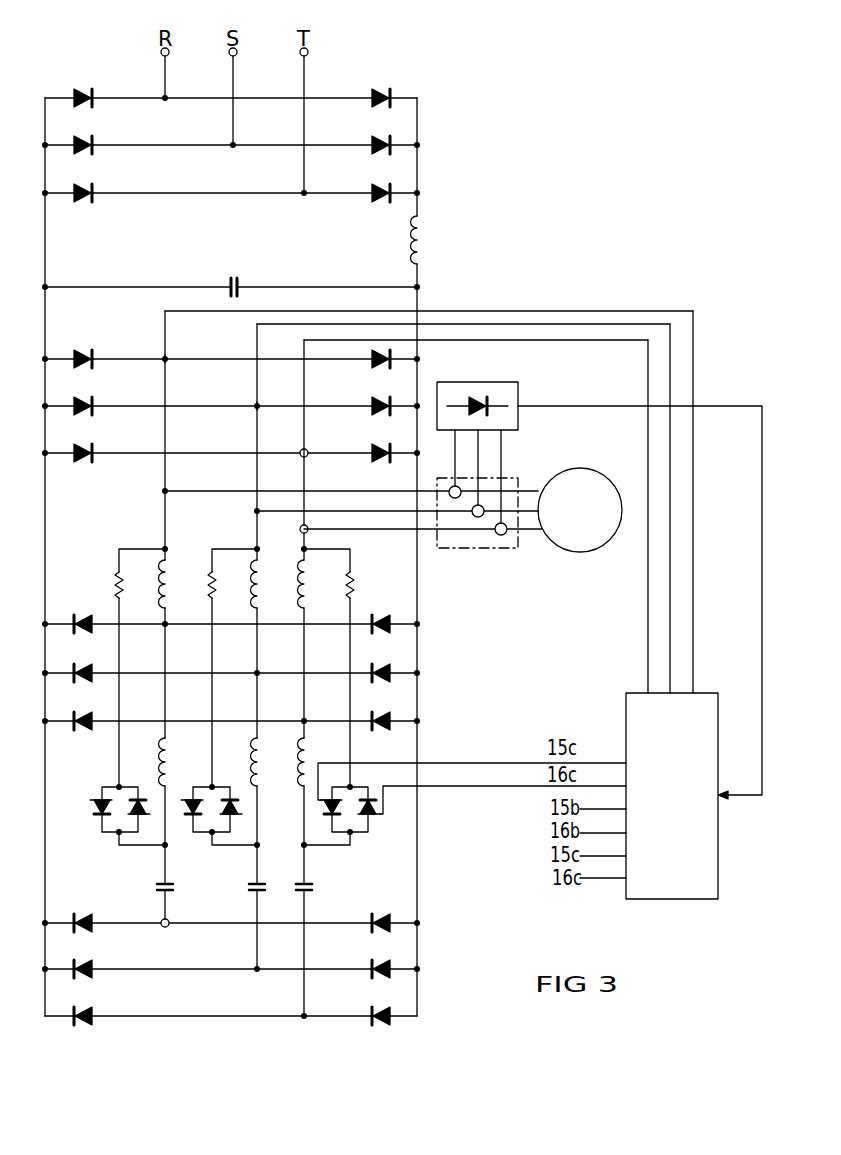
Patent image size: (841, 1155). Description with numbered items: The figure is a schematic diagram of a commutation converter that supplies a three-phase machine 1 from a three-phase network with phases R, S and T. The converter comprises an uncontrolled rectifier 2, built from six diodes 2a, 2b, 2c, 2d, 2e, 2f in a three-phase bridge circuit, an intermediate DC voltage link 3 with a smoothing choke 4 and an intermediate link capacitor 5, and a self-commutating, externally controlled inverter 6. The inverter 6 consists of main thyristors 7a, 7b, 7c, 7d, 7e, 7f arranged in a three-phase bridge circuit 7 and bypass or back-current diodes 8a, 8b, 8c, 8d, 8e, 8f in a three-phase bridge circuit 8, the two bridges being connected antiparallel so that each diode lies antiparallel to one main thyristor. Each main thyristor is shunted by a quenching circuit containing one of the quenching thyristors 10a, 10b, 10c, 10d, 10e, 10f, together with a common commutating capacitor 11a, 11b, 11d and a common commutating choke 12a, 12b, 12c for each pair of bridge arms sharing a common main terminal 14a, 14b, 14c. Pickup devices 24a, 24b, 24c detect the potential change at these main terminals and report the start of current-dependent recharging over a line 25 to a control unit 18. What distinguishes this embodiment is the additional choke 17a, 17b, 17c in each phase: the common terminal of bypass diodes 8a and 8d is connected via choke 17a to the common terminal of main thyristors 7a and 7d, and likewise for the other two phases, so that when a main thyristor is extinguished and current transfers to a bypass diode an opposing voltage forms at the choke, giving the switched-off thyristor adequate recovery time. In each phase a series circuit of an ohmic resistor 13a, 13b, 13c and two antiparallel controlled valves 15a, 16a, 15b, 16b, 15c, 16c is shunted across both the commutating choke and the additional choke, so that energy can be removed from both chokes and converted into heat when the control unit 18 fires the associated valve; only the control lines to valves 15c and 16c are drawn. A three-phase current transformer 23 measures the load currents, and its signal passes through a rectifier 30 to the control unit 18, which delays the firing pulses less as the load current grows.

The three-phase machine 1 is at (593, 470).
The uncontrolled rectifier 2 is at (211, 136).
The diode 2a is at (80, 89).
The diode 2b is at (85, 136).
The diode 2c is at (85, 184).
The diode 2d is at (376, 89).
The diode 2e is at (374, 137).
The diode 2f is at (374, 186).
The intermediate DC voltage link 3 is at (270, 230).
The smoothing choke 4 is at (424, 237).
The intermediate link capacitor 5 is at (232, 278).
The inverter 6 is at (96, 509).
The three-phase bridge circuit of main thyristors 7 is at (241, 662).
The main thyristor 7a is at (78, 616).
The main thyristor 7b is at (78, 665).
The main thyristor 7c is at (78, 713).
The main thyristor 7d is at (388, 616).
The main thyristor 7e is at (388, 665).
The main thyristor 7f is at (388, 713).
The three-phase bridge circuit of bypass diodes 8 is at (198, 442).
The bypass diode 8a is at (78, 351).
The bypass diode 8b is at (80, 399).
The bypass diode 8c is at (80, 447).
The bypass diode 8d is at (384, 366).
The bypass diode 8e is at (384, 413).
The bypass diode 8f is at (384, 460).
The quenching thyristor 10a is at (78, 915).
The quenching thyristor 10b is at (92, 963).
The quenching thyristor 10c is at (92, 1010).
The quenching thyristor 10d is at (388, 915).
The quenching thyristor 10e is at (374, 964).
The quenching thyristor 10f is at (374, 1010).
The commutating capacitor 11a is at (157, 887).
The commutating capacitor 11b is at (249, 887).
The commutation capacitor 11d is at (312, 887).
The commutating choke 12a is at (172, 760).
The commutating choke 12b is at (254, 760).
The commutating choke 12c is at (311, 760).
The ohmic resistor 13a is at (115, 586).
The ohmic resistor 13b is at (209, 586).
The ohmic resistor 13c is at (355, 586).
The common main terminal 14a is at (164, 362).
The common main terminal 14b is at (256, 409).
The common main terminal 14c is at (308, 458).
The controlled valve 15a is at (98, 800).
The controlled valve 15b is at (189, 820).
The controlled valve 15c is at (326, 822).
The controlled valve 16a is at (142, 822).
The controlled valve 16b is at (234, 822).
The controlled valve 16c is at (371, 821).
The additional choke 17a is at (170, 590).
The additional choke 17b is at (262, 590).
The additional choke 17c is at (308, 590).
The control unit 18 is at (718, 855).
The three-phase current transformer 23 is at (474, 549).
The pickup device 24a is at (165, 350).
The pickup device 24b is at (257, 398).
The pickup device 24c is at (301, 442).
The connecting line 25 is at (424, 306).
The rectifier 30 is at (520, 388).